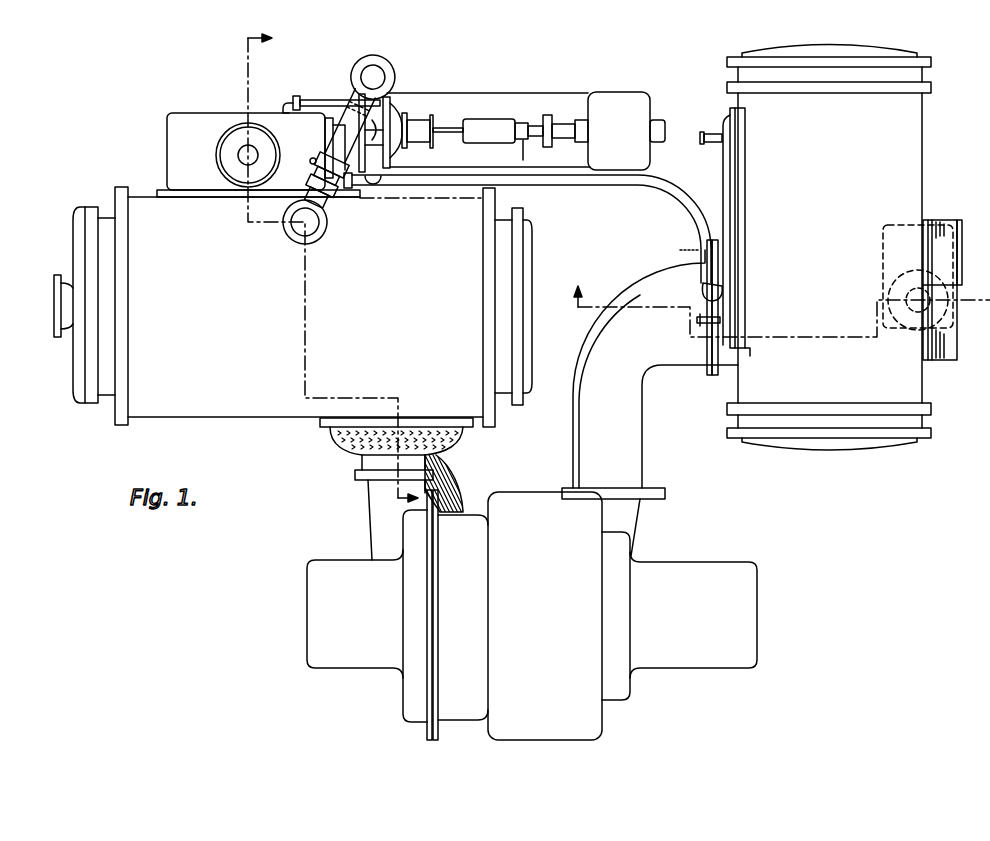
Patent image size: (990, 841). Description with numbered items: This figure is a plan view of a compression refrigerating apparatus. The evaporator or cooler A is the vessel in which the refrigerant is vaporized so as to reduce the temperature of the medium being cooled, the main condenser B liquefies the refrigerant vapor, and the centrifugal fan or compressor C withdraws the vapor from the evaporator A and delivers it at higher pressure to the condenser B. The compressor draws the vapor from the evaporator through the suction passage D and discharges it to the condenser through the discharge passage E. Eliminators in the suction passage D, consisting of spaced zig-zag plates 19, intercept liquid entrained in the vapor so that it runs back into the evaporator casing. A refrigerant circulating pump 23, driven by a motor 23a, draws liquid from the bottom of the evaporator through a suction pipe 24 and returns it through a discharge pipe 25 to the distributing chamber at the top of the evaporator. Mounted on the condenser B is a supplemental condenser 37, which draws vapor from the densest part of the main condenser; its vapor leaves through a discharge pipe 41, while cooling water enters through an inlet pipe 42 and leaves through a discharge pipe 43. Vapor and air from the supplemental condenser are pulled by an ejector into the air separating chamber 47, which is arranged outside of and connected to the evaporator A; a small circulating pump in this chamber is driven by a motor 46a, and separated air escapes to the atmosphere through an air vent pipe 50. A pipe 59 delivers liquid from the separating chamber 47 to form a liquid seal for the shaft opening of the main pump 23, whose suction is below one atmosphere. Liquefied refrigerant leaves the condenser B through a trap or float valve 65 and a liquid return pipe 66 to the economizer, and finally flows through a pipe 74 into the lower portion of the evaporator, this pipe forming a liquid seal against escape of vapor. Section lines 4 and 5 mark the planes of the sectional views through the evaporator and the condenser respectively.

The section line 4- 4 is at (333, 258).
The section line 5- 5 is at (778, 305).
The zig-zag plates 19 is at (438, 440).
The refrigerant circulating pump 23 is at (375, 165).
The motor 23a is at (526, 131).
The suction pipe 24 is at (326, 118).
The discharge pipe 25 is at (362, 97).
The supplemental condenser 37 is at (728, 175).
The discharge pipe 41 is at (704, 273).
The inlet pipe 42 is at (698, 321).
The discharge pipe 43 is at (710, 141).
The motor 46a is at (241, 142).
The air separating chamber 47 is at (258, 155).
The air vent pipe 50 is at (311, 164).
The pipe 59 is at (318, 100).
The trap or float valve 65 is at (937, 238).
The liquid return pipe 66 is at (573, 470).
The pipe 74 is at (448, 490).
The evaporator A is at (293, 307).
The main condenser B is at (829, 248).
The centrifugal compressor C is at (532, 616).
The suction passage D is at (366, 486).
The discharge passage E is at (655, 403).